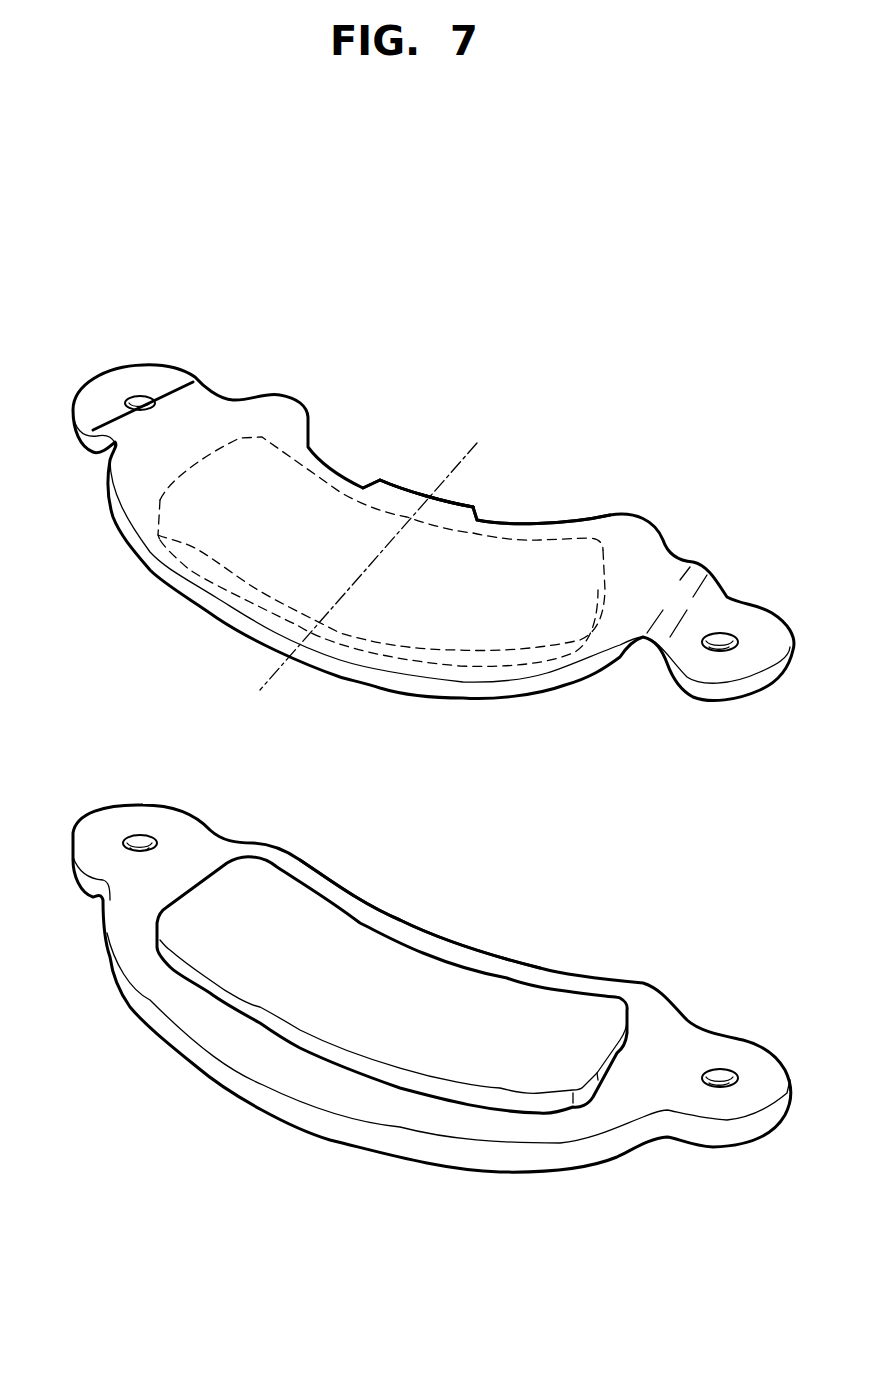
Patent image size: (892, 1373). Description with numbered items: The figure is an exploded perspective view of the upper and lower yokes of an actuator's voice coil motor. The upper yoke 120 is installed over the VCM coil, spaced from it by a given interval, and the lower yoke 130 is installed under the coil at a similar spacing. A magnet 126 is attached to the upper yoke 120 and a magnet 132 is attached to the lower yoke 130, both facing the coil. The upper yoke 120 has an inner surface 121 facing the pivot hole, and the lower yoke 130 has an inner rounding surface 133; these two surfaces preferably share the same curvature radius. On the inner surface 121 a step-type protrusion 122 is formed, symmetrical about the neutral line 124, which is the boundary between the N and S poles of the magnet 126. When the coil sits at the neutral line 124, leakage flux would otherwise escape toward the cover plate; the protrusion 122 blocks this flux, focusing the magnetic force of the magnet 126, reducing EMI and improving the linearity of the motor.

The upper yoke 120 is at (586, 495).
The inner surface 121 is at (510, 520).
The step-type protrusion 122 is at (392, 497).
The neutral line 124 is at (440, 485).
The magnet 126 is at (238, 477).
The lower yoke 130 is at (437, 1182).
The magnet 132 is at (240, 863).
The inner rounding surface 133 is at (423, 942).